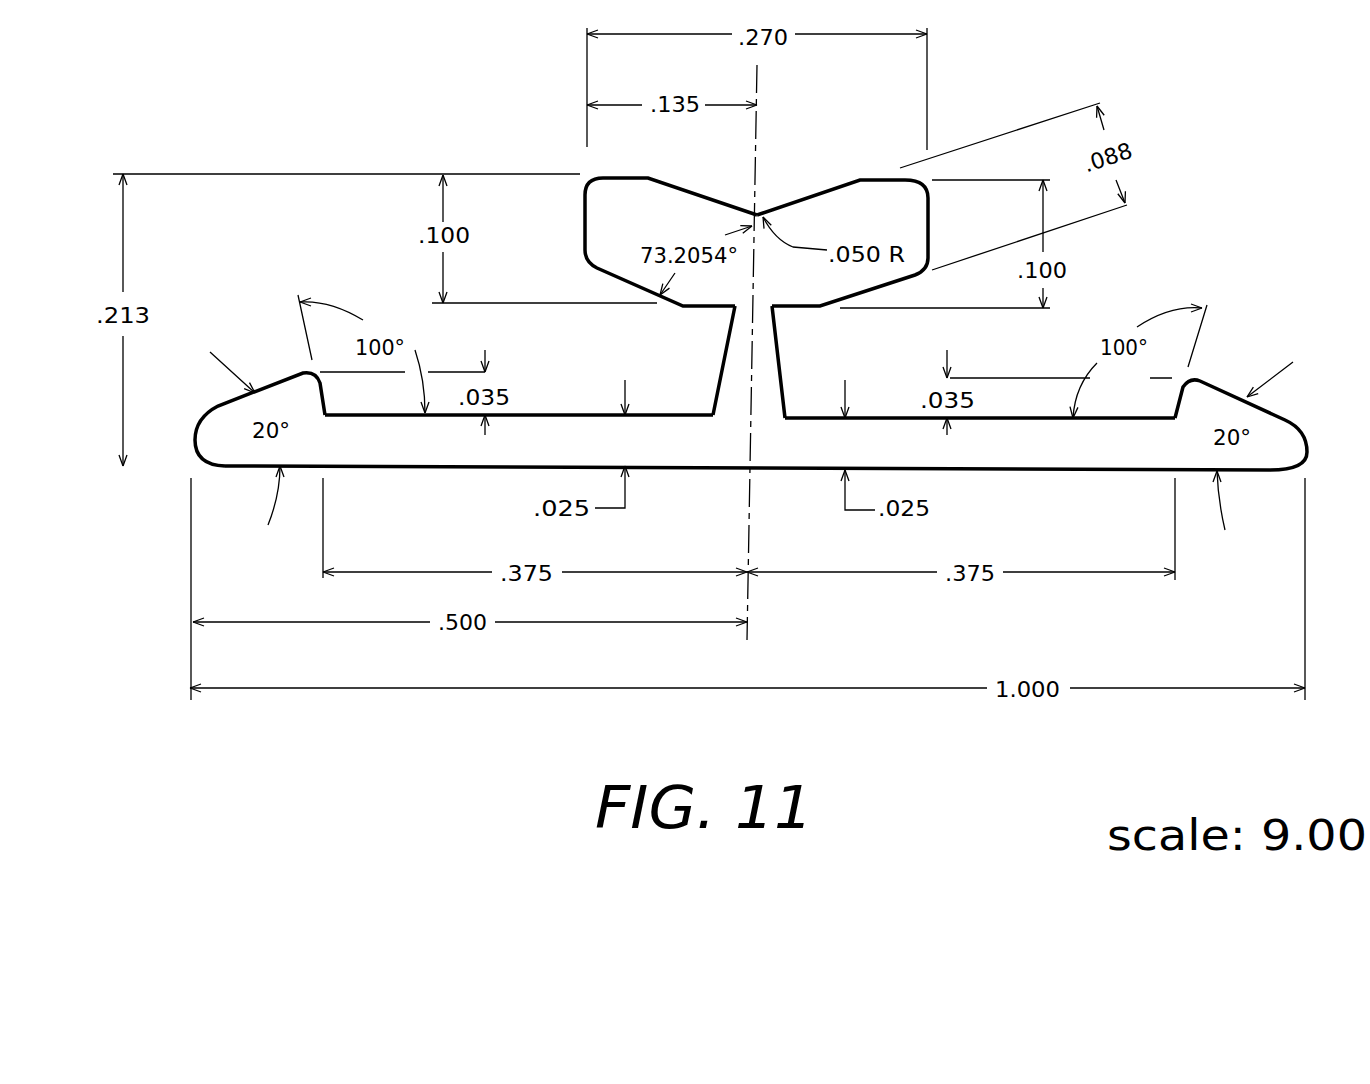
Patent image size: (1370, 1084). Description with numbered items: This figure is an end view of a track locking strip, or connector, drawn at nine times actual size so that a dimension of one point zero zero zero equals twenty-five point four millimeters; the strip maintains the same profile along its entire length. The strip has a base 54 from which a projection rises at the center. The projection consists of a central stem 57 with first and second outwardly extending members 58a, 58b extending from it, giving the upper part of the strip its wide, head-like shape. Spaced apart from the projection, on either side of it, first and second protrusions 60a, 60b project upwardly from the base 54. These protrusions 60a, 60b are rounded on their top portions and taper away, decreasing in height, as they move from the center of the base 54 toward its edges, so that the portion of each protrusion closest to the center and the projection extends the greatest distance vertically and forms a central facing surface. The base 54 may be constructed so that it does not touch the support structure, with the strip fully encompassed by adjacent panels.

The base 54 is at (1006, 418).
The central stem 57 is at (782, 362).
The first outwardly extending member 58a is at (583, 218).
The second outwardly extending member 58b is at (930, 222).
The first protrusion 60a is at (290, 373).
The second protrusion 60b is at (1210, 380).